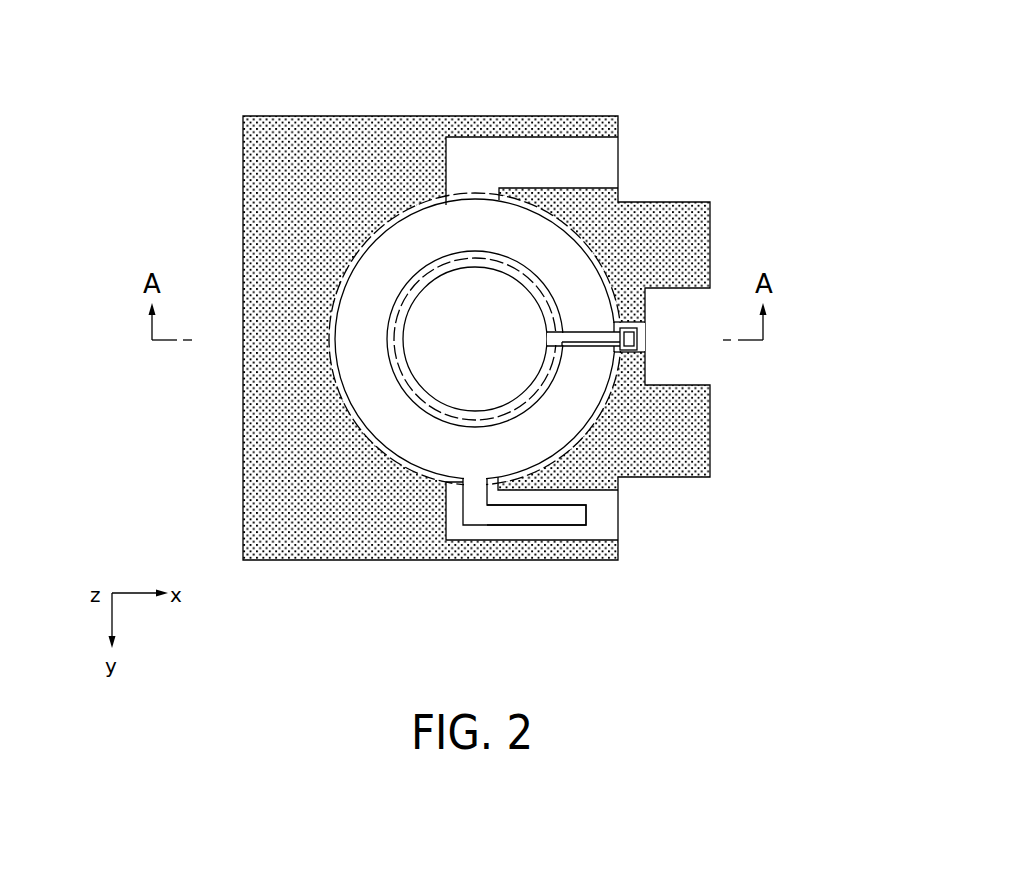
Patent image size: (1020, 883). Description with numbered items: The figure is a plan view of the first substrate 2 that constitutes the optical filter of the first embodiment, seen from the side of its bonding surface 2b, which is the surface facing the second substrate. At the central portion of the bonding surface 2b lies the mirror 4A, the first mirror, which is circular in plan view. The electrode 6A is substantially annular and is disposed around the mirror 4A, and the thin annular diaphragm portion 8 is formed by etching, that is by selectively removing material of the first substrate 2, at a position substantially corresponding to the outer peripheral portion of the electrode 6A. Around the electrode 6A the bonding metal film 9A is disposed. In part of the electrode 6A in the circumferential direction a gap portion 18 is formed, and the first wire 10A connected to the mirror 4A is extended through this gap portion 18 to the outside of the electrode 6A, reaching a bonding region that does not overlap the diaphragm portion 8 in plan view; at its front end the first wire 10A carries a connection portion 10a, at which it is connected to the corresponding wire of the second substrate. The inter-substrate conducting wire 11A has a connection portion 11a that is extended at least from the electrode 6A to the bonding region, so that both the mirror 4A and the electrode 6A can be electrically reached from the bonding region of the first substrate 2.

The first substrate 2 is at (716, 133).
The bonding surface 2b is at (593, 527).
The mirror 4A is at (445, 313).
The electrode 6A is at (435, 457).
The diaphragm portion 8 is at (372, 440).
The bonding metal film 9A is at (262, 512).
The first wire 10A is at (578, 342).
The connection portion 10a is at (637, 332).
The inter-substrate conducting wire 11A is at (488, 527).
The connection portion 11a is at (572, 519).
The gap portion 18 is at (596, 343).